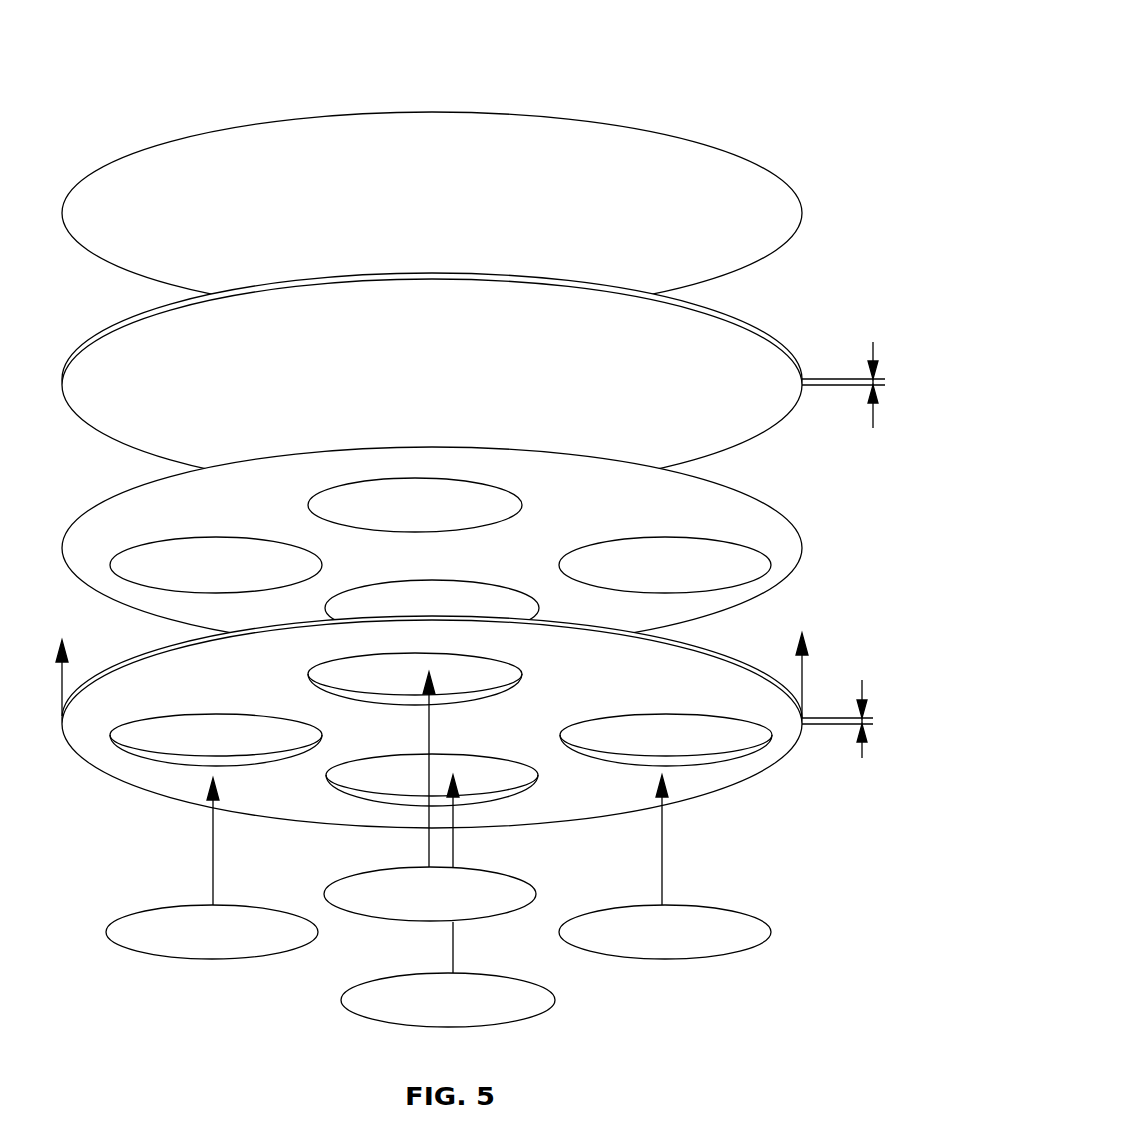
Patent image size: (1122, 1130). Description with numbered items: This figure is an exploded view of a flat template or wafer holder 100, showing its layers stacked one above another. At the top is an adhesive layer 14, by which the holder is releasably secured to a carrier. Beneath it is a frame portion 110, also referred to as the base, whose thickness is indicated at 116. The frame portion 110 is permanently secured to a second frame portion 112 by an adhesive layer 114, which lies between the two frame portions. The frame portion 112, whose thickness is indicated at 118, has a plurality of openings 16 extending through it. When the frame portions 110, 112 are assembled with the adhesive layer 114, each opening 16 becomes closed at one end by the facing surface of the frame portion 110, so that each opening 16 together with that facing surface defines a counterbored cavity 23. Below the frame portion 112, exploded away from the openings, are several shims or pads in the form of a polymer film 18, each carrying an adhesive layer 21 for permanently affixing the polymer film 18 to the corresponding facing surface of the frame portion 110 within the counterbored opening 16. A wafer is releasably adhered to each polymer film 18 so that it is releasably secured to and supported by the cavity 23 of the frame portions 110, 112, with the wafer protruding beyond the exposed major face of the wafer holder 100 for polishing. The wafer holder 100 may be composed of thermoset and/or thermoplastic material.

The wafer holder 100 is at (710, 68).
The adhesive layer 14 is at (650, 229).
The frame portion 110 is at (652, 384).
The thickness of first layer 116 is at (885, 383).
The adhesive layer 114 is at (649, 522).
The frame portion 112 is at (446, 737).
The thickness of third layer 118 is at (867, 721).
The opening 16 is at (167, 762).
The cavity 23 is at (205, 762).
The polymer film 18 is at (232, 943).
The adhesive layer 21 is at (426, 931).